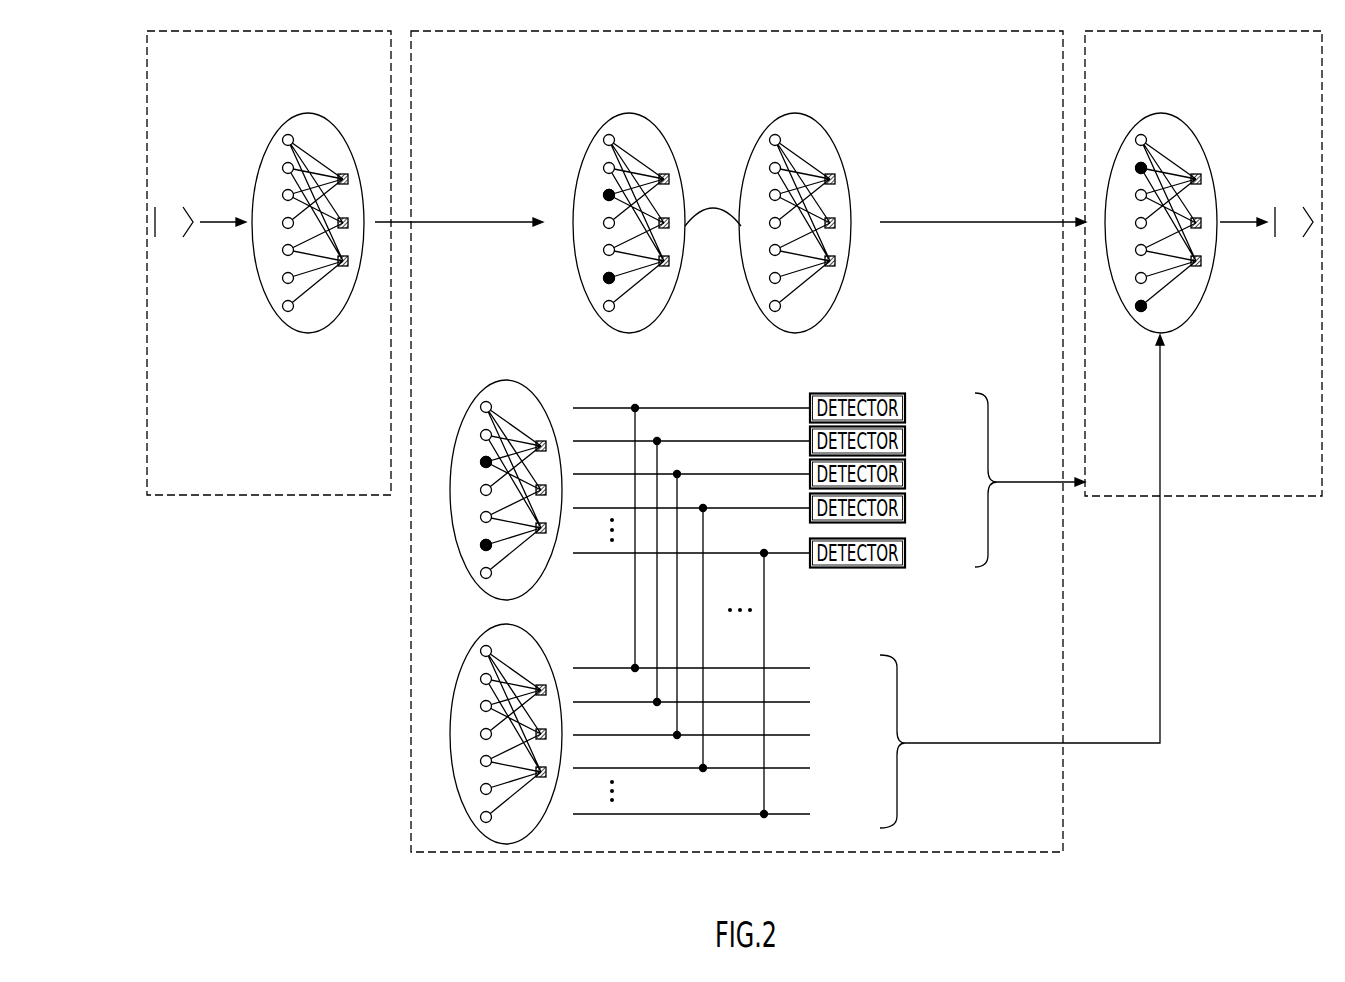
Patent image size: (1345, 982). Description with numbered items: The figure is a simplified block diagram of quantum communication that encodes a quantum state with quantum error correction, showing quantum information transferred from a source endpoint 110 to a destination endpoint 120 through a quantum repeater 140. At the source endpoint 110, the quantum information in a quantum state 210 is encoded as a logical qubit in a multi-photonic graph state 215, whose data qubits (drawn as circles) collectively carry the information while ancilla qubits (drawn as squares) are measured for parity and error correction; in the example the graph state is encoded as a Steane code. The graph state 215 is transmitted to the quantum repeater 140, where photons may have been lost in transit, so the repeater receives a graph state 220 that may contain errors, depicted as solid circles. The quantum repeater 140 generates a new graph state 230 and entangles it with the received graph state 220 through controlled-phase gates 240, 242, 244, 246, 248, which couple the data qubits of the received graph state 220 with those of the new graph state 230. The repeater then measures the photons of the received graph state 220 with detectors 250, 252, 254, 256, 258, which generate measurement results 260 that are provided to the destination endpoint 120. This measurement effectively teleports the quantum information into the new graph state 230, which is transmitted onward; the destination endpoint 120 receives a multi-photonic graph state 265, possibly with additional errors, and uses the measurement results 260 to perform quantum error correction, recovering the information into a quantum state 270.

The source endpoint 110 is at (280, 497).
The destination endpoint 120 is at (1290, 497).
The quantum repeater 140 is at (920, 853).
The quantum state 210 is at (175, 256).
The multi-photonic graph state 215 is at (287, 120).
The received graph state 220 is at (601, 122).
The new graph state 230 is at (822, 122).
The controlled-phase gate 240 is at (636, 403).
The controlled-phase gate 242 is at (658, 437).
The controlled-phase gate 244 is at (678, 470).
The controlled-phase gate 246 is at (704, 504).
The controlled-phase gate 248 is at (764, 549).
The detector 250 is at (905, 408).
The detector 252 is at (905, 441).
The detector 254 is at (905, 474).
The detector 256 is at (905, 508).
The detector 258 is at (905, 553).
The measurement results 260 is at (1035, 478).
The multi-photonic graph state 265 is at (1130, 135).
The quantum state 270 is at (1281, 254).